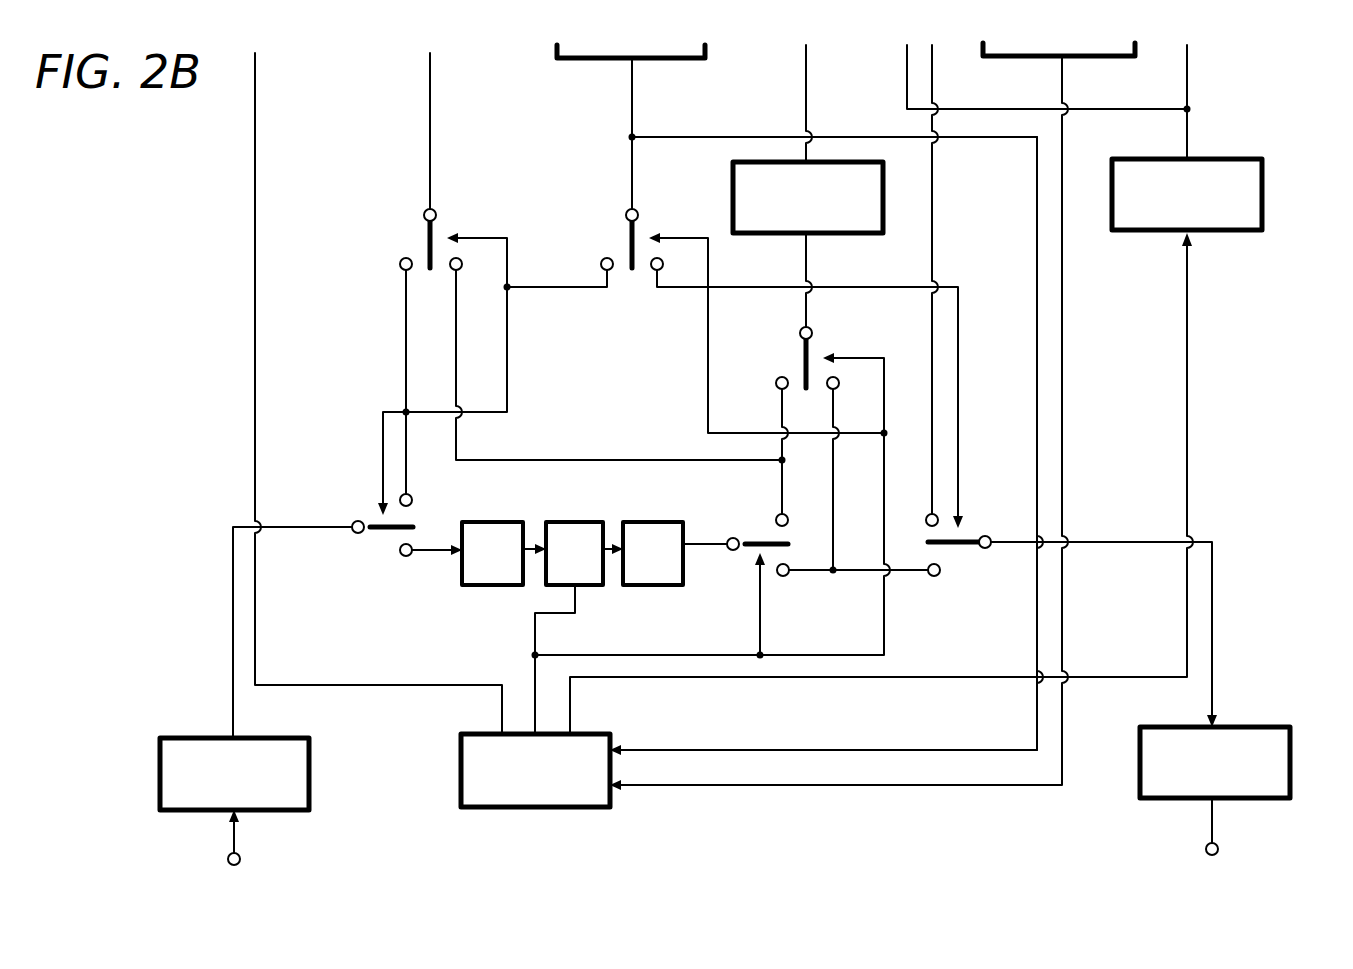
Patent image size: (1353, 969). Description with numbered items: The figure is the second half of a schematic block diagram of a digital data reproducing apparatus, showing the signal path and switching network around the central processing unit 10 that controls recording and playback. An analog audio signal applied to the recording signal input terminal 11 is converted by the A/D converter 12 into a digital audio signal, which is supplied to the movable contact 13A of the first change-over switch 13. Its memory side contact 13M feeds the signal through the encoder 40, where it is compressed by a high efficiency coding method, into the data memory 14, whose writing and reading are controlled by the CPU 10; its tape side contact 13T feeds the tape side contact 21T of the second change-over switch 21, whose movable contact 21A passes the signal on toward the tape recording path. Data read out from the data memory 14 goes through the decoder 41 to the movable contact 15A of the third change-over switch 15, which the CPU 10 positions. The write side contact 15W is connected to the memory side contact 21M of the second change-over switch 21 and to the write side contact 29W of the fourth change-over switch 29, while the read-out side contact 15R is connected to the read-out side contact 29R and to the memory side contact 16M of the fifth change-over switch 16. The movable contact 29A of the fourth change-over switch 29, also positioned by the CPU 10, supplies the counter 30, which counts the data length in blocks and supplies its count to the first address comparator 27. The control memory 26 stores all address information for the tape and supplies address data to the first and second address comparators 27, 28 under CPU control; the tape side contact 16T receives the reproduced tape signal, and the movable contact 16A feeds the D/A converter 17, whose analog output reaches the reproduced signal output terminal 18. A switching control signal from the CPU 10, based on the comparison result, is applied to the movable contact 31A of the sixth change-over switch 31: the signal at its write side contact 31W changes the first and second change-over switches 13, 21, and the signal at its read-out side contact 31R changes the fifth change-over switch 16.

The central processing unit 10 is at (535, 810).
The recording signal input terminal 11 is at (226, 860).
The analog-to-digital converter 12 is at (296, 812).
The first change-over switch 13 is at (383, 537).
The movable contact of first change-over switch 13A is at (355, 520).
The second fixed contact (tape side contact) of first change-over switch 13T is at (412, 500).
The first fixed contact (memory side contact) of first change-over switch 13M is at (406, 558).
The data memory 14 is at (596, 527).
The third change-over switch 15 is at (748, 530).
The movable contact of third change-over switch 15A is at (733, 552).
The first fixed contact (write side contact) of third change-over switch 15W is at (778, 516).
The second fixed contact (read-out side contact) of third change-over switch 15R is at (786, 578).
The fifth change-over switch 16 is at (970, 530).
The movable contact of fifth change-over switch 16A is at (985, 550).
The second fixed contact (tape side contact) of fifth change-over switch 16T is at (935, 512).
The first fixed contact (memory side contact) of fifth change-over switch 16M is at (934, 578).
The digital-to-analog converter 17 is at (1262, 727).
The reproduced signal output terminal 18 is at (1220, 851).
The second change-over switch 21 is at (420, 240).
The movable contact of second change-over switch 21A is at (433, 212).
The first fixed contact (tape side contact) of second change-over switch 21T is at (404, 270).
The second fixed contact (memory side contact) of second change-over switch 21M is at (458, 272).
The control memory 26 is at (1246, 232).
The first address comparator 27 is at (562, 62).
The second address comparator 28 is at (1124, 59).
The fourth change-over switch 29 is at (800, 355).
The movable contact of fourth change-over switch 29A is at (814, 333).
The first fixed contact (write side contact) of fourth change-over switch 29W is at (780, 389).
The second fixed contact (read-out side contact) of fourth change-over switch 29R is at (840, 385).
The counter 30 is at (868, 236).
The sixth change-over switch 31 is at (622, 240).
The movable contact of sixth change-over switch 31A is at (637, 213).
The first fixed contact (write side contact) of sixth change-over switch 31W is at (601, 262).
The second fixed contact (read-out side contact) of sixth change-over switch 31R is at (655, 272).
The encoder 40 is at (510, 528).
The decoder 41 is at (655, 522).